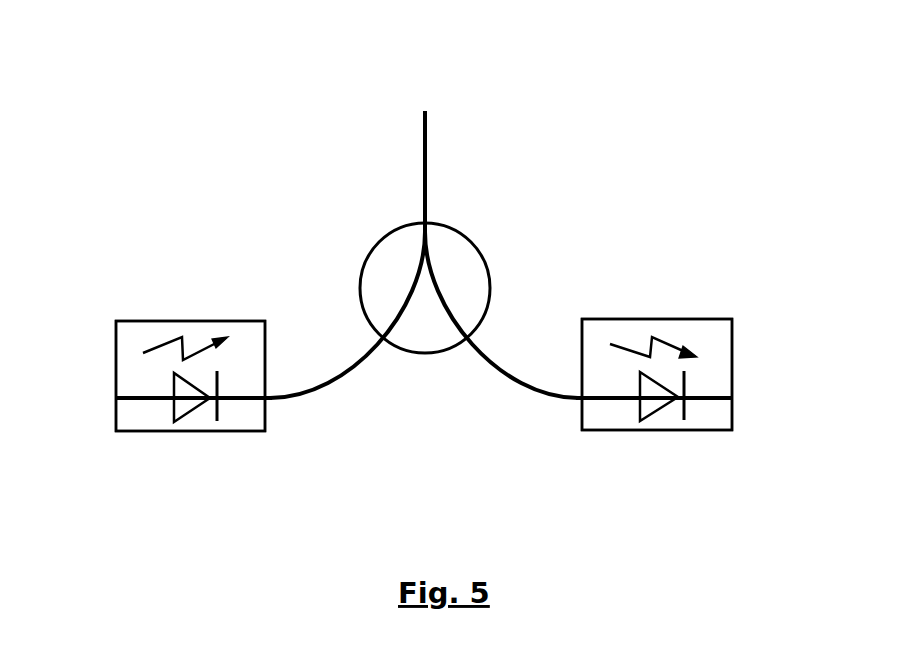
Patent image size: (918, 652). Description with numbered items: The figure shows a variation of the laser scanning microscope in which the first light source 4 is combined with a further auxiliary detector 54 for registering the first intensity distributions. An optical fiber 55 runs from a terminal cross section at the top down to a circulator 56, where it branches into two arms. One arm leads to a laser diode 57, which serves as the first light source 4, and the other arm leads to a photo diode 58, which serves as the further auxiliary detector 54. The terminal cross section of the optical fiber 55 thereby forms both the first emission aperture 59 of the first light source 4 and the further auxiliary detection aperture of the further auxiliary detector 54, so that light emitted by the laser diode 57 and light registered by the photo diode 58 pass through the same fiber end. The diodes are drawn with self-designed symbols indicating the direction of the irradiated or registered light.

The first light source 4 is at (116, 432).
The further auxiliary detector 54 is at (732, 319).
The optical fiber 55 is at (428, 178).
The circulator 56 is at (442, 352).
The laser diode 57 is at (190, 376).
The photo diode 58 is at (732, 430).
The first emission aperture 59 is at (425, 113).